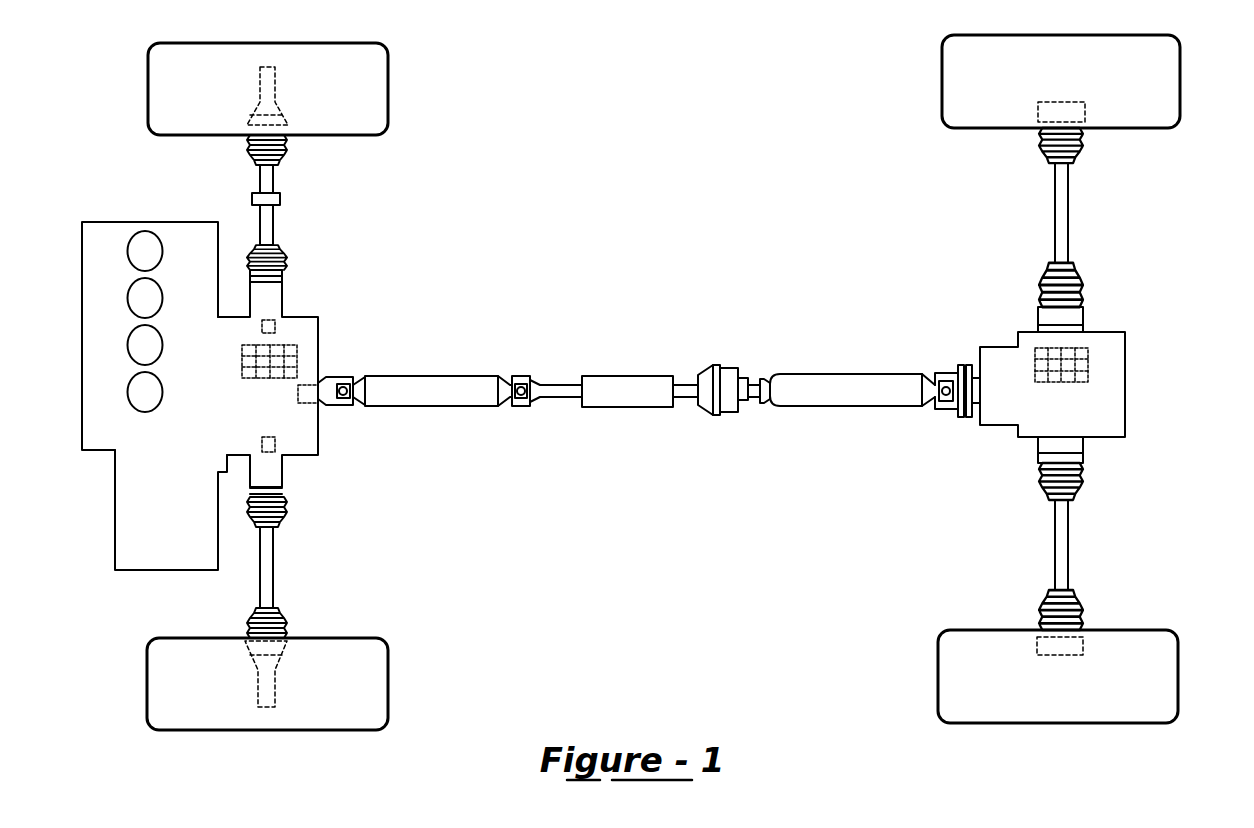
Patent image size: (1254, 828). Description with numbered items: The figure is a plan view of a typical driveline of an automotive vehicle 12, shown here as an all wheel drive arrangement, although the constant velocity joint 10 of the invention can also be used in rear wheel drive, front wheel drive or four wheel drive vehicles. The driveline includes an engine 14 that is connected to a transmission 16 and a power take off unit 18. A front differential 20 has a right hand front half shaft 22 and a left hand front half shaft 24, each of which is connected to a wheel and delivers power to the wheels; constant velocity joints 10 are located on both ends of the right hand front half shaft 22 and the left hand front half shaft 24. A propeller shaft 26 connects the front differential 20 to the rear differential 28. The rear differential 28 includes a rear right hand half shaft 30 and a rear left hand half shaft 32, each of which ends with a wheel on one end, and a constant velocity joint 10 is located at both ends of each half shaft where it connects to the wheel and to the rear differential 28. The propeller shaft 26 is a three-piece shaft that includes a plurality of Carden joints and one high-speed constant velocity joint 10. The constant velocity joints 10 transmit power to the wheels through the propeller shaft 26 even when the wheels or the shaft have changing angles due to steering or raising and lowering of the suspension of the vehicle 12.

The constant velocity joint 10 is at (735, 360).
The automotive vehicle 12 is at (636, 140).
The engine 14 is at (98, 275).
The transmission 16 is at (137, 497).
The power take off unit 18 is at (305, 337).
The front differential 20 is at (303, 430).
The right hand front half shaft 22 is at (273, 227).
The left hand front half shaft 24 is at (273, 552).
The propeller shaft 26 is at (636, 408).
The rear differential 28 is at (1127, 365).
The rear right hand half shaft 30 is at (1067, 214).
The rear left hand half shaft 32 is at (1067, 538).